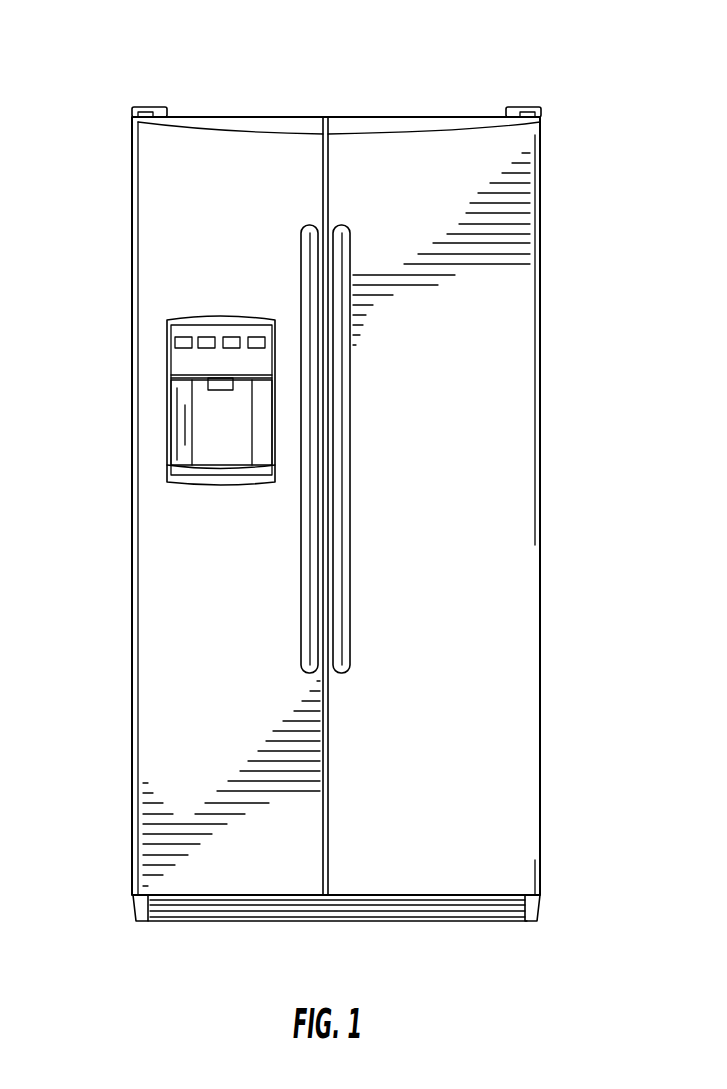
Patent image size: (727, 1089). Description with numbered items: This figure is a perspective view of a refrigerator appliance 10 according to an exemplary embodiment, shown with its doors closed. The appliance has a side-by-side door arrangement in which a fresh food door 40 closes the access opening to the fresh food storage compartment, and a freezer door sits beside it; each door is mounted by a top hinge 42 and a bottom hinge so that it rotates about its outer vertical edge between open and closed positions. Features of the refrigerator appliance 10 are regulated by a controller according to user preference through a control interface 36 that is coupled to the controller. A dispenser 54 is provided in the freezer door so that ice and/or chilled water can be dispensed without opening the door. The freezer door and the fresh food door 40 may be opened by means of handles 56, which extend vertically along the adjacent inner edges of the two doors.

The refrigerator appliance 10 is at (366, 62).
The control interface 36 is at (153, 605).
The fresh food door 40 is at (503, 584).
The top hinge 42 is at (151, 107).
The dispenser 54 is at (165, 410).
The handles 56 is at (302, 262).